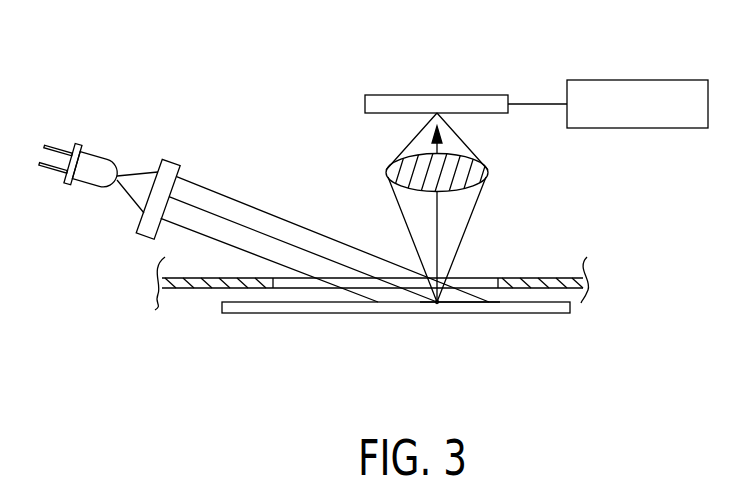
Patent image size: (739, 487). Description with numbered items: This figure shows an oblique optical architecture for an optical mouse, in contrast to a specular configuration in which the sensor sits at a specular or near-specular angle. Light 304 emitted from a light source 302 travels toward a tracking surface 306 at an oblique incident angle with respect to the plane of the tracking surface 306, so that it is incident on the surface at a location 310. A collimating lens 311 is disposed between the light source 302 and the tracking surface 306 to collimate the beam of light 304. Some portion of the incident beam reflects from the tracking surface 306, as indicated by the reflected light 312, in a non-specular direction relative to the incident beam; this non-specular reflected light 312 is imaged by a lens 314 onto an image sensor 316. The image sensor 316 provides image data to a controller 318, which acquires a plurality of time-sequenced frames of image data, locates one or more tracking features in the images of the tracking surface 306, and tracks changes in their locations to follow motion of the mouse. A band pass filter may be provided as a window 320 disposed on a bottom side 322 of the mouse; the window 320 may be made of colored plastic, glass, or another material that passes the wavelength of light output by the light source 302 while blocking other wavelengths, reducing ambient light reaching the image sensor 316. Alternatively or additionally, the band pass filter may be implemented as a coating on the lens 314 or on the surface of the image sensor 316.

The light source 302 is at (93, 172).
The light 304 is at (229, 198).
The tracking surface 306 is at (519, 293).
The location 310 is at (438, 305).
The collimating lens 311 is at (168, 171).
The reflected light 312 is at (455, 238).
The lens 314 is at (468, 176).
The image sensor 316 is at (437, 102).
The controller 318 is at (642, 80).
The window 320 is at (302, 283).
The bottom side 322 is at (178, 289).